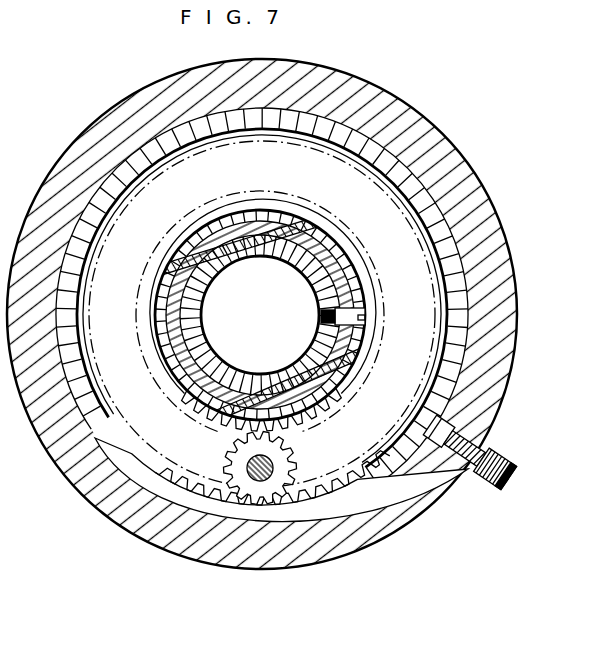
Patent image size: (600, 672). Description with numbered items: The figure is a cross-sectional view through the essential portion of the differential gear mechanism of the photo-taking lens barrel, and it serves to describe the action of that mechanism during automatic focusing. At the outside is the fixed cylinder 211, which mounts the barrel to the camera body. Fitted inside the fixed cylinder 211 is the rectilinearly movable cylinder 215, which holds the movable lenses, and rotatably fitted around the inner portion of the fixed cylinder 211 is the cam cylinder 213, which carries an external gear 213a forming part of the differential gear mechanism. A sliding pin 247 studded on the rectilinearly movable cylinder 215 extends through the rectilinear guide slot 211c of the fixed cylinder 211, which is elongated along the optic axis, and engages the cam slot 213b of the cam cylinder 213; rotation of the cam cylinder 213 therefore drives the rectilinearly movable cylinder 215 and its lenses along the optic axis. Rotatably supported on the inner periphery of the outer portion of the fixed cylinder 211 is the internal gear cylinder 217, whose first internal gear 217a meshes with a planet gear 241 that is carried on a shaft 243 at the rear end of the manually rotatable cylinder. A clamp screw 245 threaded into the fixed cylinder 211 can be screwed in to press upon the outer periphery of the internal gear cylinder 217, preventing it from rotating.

The fixed cylinder 211 is at (507, 313).
The rectilinear guide slot 211c is at (347, 333).
The cam cylinder 213 is at (312, 420).
The external gear 213a is at (333, 410).
The cam slot 213b is at (357, 305).
The rectilinearly movable cylinder 215 is at (293, 258).
The internal gear cylinder 217 is at (317, 507).
The first internal gear 217a is at (350, 492).
The planet gear 241 is at (237, 452).
The shaft 243 is at (242, 463).
The clamp screw 245 is at (510, 455).
The sliding pin 247 is at (345, 316).